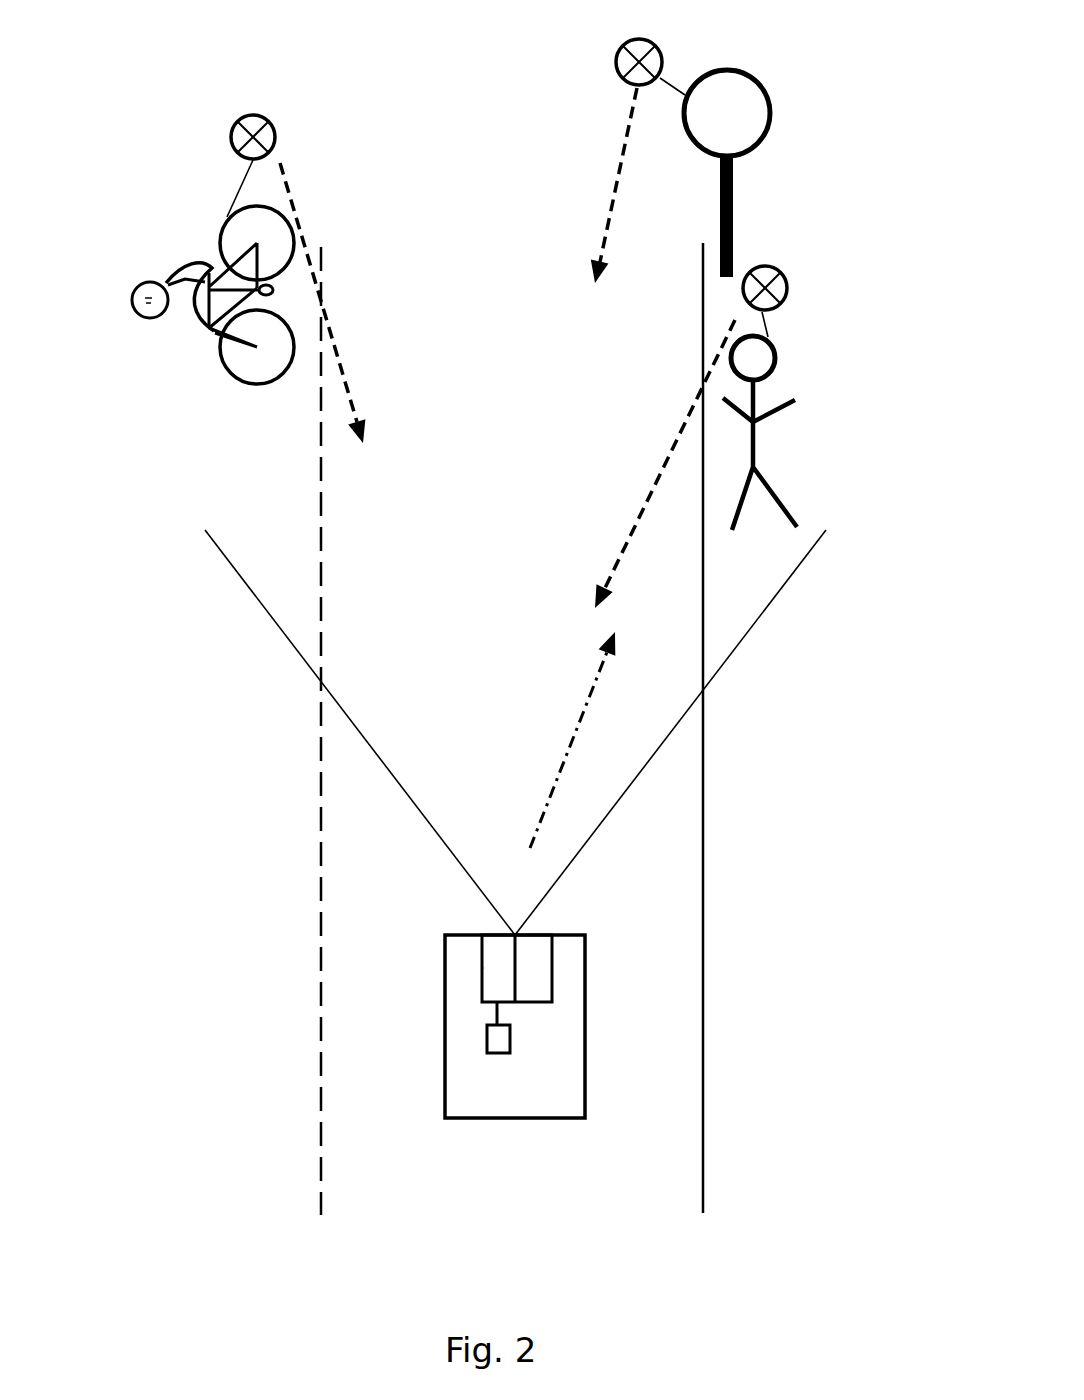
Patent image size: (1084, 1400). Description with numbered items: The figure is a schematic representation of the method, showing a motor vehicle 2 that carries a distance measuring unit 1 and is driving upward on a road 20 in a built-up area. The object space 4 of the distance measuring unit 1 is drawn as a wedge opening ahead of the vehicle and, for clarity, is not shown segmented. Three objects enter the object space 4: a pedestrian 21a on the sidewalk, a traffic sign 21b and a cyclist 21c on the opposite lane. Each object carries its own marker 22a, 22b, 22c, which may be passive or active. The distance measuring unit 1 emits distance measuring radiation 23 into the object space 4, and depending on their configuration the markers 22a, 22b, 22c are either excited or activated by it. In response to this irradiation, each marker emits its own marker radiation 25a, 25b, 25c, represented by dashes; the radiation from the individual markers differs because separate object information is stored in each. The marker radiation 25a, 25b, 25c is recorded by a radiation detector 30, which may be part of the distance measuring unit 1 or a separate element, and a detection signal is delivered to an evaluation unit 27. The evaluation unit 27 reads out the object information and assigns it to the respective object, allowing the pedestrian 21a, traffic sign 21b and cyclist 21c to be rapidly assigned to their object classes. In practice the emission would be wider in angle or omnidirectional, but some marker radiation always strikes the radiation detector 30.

The distance measuring unit 1 is at (532, 968).
The motor vehicle 2 is at (553, 1070).
The object space 4 is at (637, 775).
The road 20 is at (635, 1168).
The pedestrian 21a is at (798, 418).
The traffic sign 21b is at (778, 110).
The cyclist 21c is at (198, 230).
The marker 22a is at (787, 272).
The marker 22b is at (684, 46).
The marker 22c is at (262, 110).
The distance measuring radiation 23 is at (555, 795).
The marker radiation 25a is at (687, 408).
The marker radiation 25b is at (605, 212).
The marker radiation 25c is at (293, 200).
The evaluation unit 27 is at (503, 1040).
The radiation detector 30 is at (495, 972).